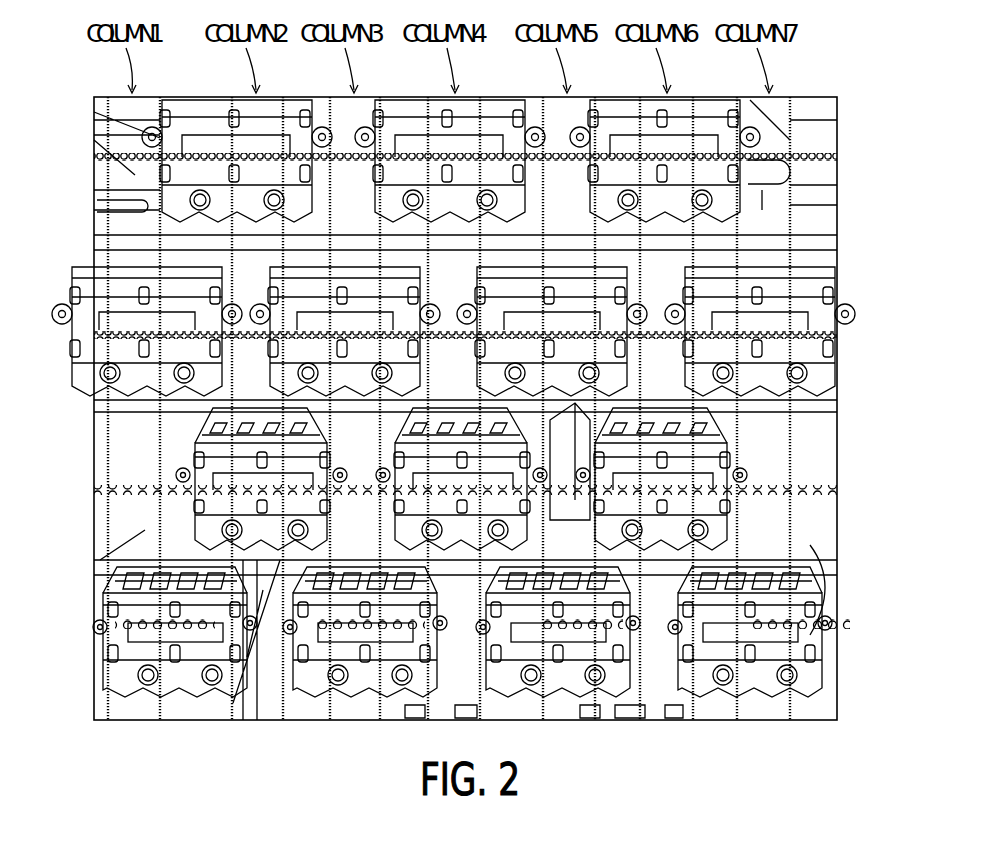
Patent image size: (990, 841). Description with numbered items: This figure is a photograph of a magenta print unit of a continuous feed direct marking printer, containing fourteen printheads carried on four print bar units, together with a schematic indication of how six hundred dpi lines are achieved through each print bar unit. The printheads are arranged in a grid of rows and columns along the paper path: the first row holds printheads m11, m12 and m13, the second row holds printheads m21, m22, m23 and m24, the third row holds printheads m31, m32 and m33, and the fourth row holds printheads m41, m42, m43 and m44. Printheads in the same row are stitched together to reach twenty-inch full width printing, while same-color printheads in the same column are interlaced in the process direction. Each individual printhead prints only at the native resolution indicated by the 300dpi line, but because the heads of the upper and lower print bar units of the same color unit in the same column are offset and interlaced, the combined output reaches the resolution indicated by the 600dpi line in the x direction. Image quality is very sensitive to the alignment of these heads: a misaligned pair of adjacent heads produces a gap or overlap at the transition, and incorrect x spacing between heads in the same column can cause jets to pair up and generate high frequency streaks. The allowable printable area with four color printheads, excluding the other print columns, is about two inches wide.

The printhead m11 is at (205, 130).
The printhead m12 is at (414, 130).
The printhead m13 is at (622, 125).
The printhead m21 is at (103, 307).
The printhead m22 is at (366, 300).
The printhead m23 is at (570, 300).
The printhead m24 is at (802, 302).
The printhead m31 is at (180, 473).
The printhead m32 is at (469, 424).
The printhead m33 is at (708, 462).
The printhead m41 is at (143, 648).
The printhead m42 is at (350, 647).
The printhead m43 is at (538, 643).
The printhead m44 is at (775, 643).
The 600 dpi line 600dpi is at (853, 158).
The 300 dpi line 300dpi is at (853, 494).